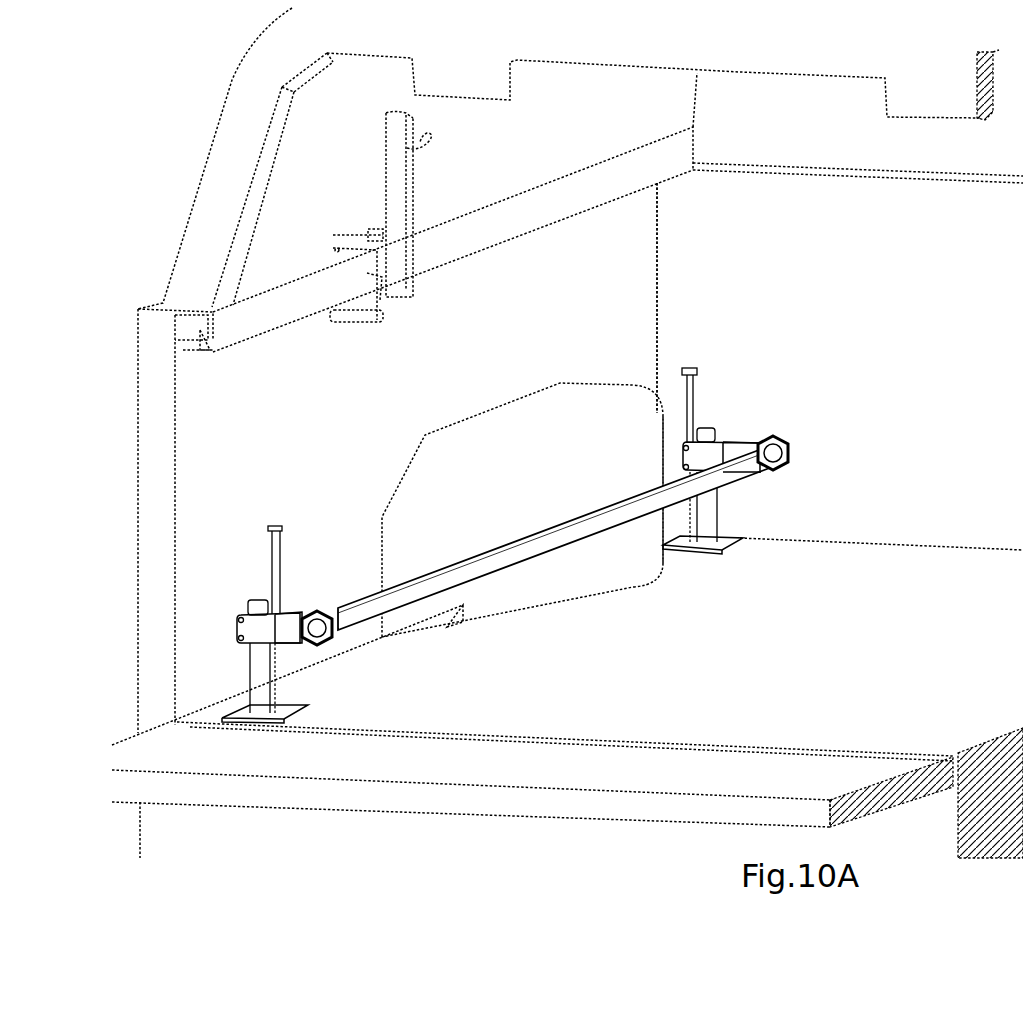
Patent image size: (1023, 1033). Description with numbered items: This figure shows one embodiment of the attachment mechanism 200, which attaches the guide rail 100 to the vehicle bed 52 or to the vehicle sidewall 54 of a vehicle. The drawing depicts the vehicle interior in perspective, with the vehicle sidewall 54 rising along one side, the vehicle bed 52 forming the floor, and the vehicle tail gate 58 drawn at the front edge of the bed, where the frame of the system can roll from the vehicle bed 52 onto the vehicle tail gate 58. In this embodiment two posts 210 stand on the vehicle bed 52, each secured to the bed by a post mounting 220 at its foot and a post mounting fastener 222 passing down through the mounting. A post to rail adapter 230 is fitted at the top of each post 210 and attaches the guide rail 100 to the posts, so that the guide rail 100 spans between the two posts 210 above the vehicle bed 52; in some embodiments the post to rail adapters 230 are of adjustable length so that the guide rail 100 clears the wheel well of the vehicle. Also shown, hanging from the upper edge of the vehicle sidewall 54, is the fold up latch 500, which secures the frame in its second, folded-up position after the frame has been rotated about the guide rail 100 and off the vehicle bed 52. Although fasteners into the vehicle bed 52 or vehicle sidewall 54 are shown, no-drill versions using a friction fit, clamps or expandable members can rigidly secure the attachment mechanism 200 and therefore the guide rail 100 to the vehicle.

The guide rail 100 is at (527, 547).
The attachment mechanism 200 is at (582, 478).
The post 210 is at (262, 668).
The post mounting 220 is at (300, 706).
The post mounting fastener 222 is at (272, 522).
The post to rail adapter 230 is at (295, 624).
The fold up latch 500 is at (440, 302).
The vehicle bed 52 is at (883, 673).
The vehicle sidewall 54 is at (351, 378).
The vehicle tail gate 58 is at (522, 778).